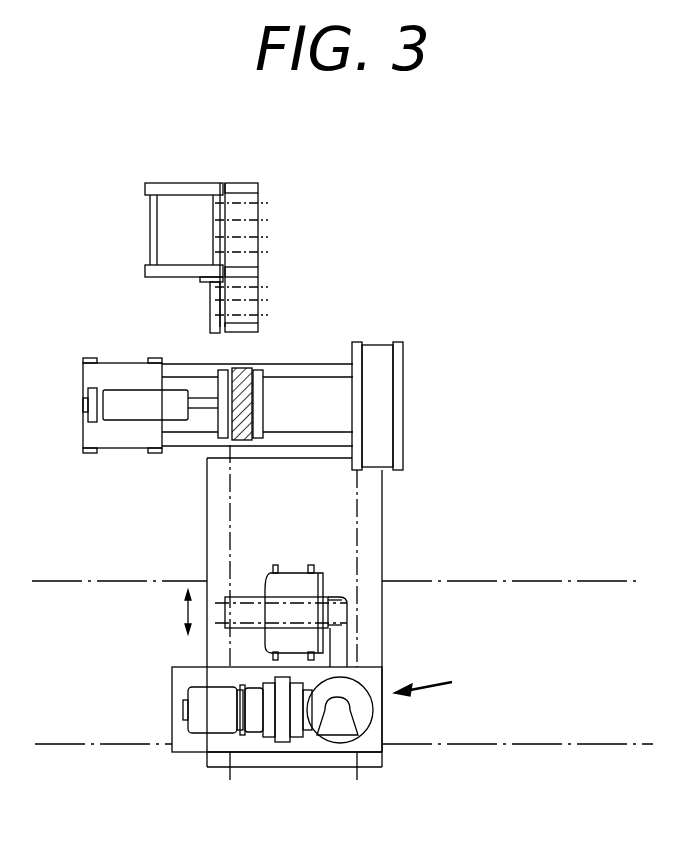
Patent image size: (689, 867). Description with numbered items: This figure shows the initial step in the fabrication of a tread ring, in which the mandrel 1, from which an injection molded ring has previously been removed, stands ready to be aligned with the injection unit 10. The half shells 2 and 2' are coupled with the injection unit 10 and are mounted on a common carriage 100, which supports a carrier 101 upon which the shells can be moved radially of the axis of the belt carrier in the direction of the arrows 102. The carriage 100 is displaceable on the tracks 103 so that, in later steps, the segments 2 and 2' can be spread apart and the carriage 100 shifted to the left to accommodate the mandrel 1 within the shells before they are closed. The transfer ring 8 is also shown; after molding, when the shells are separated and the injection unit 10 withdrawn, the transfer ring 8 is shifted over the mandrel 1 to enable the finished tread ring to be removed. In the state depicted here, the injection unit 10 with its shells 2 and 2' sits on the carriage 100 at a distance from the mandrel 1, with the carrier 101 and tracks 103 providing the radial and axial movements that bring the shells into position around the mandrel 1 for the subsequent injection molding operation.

The mandrel 1 is at (243, 369).
The transfer ring 8 is at (357, 370).
The half shell 2 is at (294, 588).
The half shell 2' is at (369, 636).
The injection unit 10 is at (445, 687).
The carriage 100 is at (193, 745).
The carrier 101 is at (227, 625).
The arrows 102 is at (185, 612).
The tracks 103 is at (357, 578).